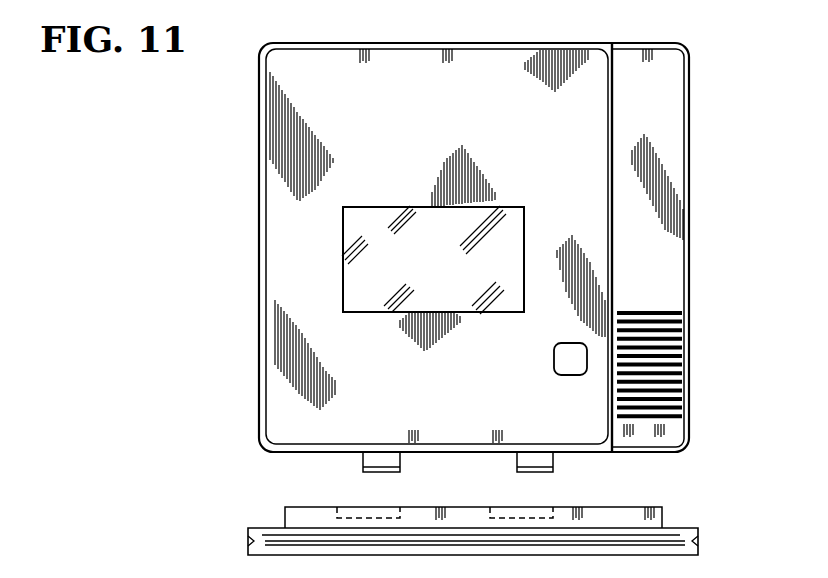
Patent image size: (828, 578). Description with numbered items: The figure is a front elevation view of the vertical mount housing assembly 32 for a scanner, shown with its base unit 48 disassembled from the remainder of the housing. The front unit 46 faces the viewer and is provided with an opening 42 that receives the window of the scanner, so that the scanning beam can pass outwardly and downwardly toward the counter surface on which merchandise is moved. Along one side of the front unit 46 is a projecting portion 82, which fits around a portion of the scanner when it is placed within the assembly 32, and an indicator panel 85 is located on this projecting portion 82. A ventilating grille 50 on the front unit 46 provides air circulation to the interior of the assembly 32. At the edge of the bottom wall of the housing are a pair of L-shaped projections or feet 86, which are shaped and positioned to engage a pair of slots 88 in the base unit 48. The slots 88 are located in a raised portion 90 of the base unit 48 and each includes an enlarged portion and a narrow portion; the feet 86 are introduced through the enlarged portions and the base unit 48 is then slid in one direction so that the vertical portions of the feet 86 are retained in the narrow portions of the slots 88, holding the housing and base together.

The vertical mount housing assembly 32 is at (234, 557).
The front unit 46 is at (492, 55).
The projecting portion 82 is at (598, 62).
The opening 42 is at (525, 220).
The indicator panel 85 is at (554, 358).
The ventilating grille 50 is at (678, 356).
The feet 86 is at (553, 462).
The slots 88 is at (530, 510).
The raised portion 90 is at (650, 507).
The base unit 48 is at (700, 529).